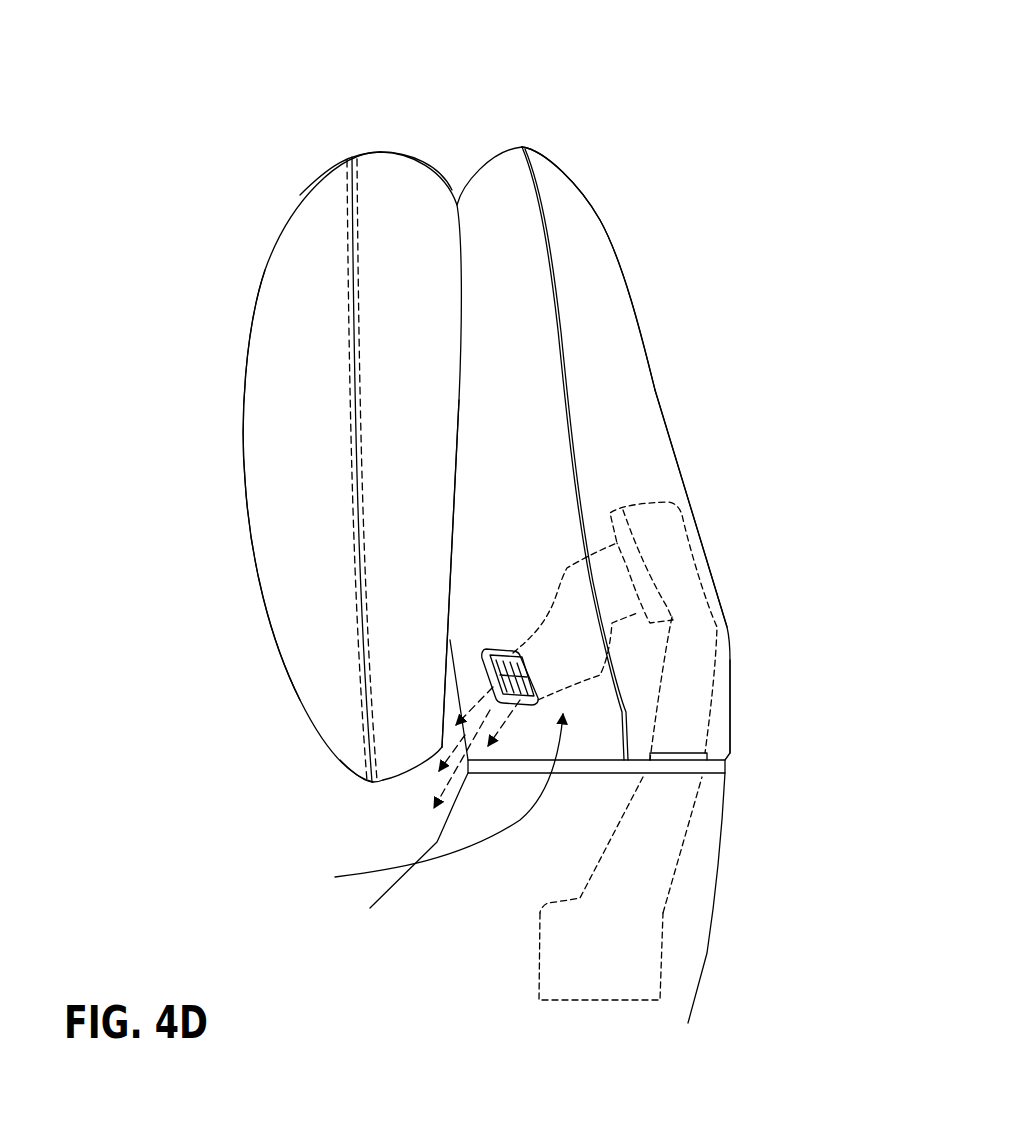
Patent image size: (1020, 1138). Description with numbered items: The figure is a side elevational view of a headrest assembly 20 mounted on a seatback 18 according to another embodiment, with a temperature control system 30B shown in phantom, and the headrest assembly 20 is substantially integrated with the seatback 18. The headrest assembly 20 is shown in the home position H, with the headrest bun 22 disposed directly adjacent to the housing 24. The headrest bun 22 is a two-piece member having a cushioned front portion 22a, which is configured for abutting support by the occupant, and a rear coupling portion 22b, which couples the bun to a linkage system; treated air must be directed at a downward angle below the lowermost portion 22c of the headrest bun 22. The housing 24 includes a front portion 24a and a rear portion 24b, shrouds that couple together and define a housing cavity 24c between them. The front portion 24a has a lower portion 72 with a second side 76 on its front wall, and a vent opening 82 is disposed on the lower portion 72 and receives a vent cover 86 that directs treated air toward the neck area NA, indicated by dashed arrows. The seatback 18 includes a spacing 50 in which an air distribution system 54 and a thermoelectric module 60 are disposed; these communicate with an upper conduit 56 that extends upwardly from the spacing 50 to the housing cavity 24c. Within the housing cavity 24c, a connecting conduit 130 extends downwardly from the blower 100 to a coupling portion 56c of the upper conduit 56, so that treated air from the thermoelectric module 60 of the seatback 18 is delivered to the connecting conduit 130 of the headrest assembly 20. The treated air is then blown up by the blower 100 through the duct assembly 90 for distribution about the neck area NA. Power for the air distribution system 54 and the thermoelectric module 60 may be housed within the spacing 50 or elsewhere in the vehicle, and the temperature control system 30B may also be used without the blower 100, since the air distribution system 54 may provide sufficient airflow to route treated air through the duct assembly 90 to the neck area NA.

The headrest assembly 20 is at (659, 84).
The home position H is at (608, 116).
The headrest bun 22 is at (184, 549).
The cushioned front portion 22a is at (280, 280).
The rear coupling portion 22b is at (390, 170).
The lowermost portion 22c is at (390, 778).
The housing 24 is at (628, 262).
The front portion 24a is at (510, 170).
The rear portion 24b is at (605, 228).
The housing cavity 24c is at (618, 424).
The temperature control system 30B is at (752, 688).
The blower 100 is at (623, 520).
The connecting conduit 130 is at (687, 608).
The coupling portion 56c is at (705, 755).
The upper conduit 56 is at (663, 810).
The spacing 50 is at (490, 904).
The seatback 18 is at (717, 893).
The air distribution system 54 is at (670, 957).
The thermoelectric module 60 is at (637, 970).
The duct assembly 90 is at (430, 803).
The second vent opening 82 is at (496, 652).
The vent cover 86 is at (484, 660).
The second side 76 is at (311, 578).
The lower portion 72 is at (467, 673).
The neck area NA is at (398, 846).